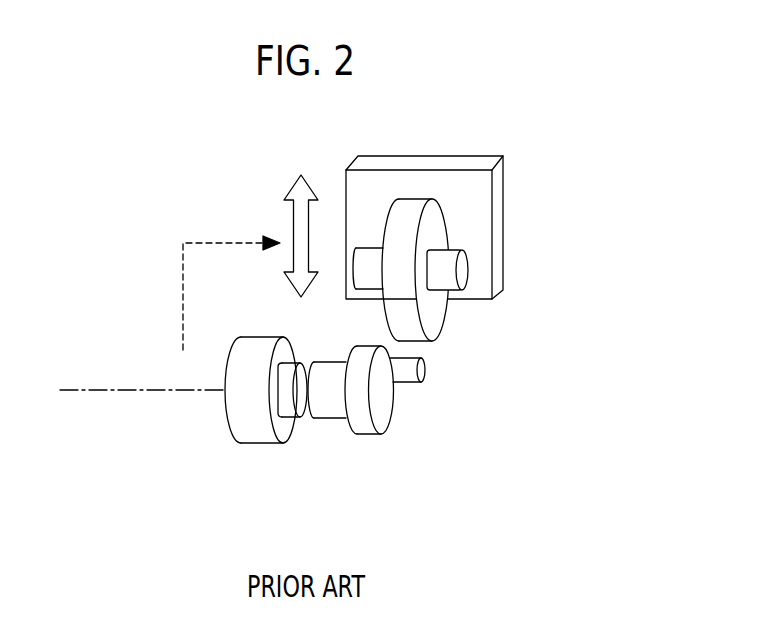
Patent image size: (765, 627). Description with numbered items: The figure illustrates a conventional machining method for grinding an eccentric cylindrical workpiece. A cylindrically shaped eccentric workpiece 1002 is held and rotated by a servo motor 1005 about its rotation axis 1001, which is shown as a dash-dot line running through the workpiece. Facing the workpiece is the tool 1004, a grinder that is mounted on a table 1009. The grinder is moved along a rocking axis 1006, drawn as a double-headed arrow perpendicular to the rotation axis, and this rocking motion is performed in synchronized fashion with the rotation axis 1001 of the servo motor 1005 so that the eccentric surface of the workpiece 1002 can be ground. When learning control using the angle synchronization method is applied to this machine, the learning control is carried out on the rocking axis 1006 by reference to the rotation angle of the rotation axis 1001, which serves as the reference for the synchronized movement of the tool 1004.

The rotation axis 1001 is at (93, 389).
The workpiece 1002 is at (395, 408).
The tool 1004 is at (448, 313).
The servo motor 1005 is at (265, 444).
The rocking axis 1006 is at (293, 230).
The table 1009 is at (503, 187).